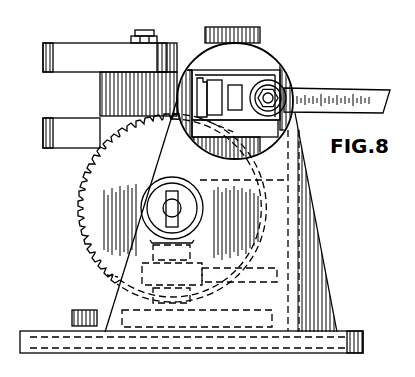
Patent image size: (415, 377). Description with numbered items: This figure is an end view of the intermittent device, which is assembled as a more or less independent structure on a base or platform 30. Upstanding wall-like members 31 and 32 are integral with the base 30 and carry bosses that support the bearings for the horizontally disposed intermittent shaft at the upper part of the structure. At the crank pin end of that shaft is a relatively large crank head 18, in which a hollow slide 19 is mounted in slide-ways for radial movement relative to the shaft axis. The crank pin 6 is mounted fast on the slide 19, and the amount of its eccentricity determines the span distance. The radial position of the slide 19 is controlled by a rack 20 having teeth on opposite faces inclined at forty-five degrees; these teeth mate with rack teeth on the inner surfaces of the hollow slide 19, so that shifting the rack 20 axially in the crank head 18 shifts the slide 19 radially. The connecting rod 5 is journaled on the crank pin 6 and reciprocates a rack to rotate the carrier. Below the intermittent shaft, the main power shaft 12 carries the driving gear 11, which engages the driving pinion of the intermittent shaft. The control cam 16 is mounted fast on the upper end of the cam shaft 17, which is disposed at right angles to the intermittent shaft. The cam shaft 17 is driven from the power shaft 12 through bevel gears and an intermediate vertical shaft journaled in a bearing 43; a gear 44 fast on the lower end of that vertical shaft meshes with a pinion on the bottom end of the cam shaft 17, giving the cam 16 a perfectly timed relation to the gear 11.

The connecting rod 5 is at (359, 92).
The crank pin 6 is at (290, 86).
The driving gear 11 is at (88, 230).
The main power shaft 12 is at (170, 208).
The control cam 16 is at (96, 48).
The cam shaft 17 is at (147, 30).
The crank head 18 is at (267, 75).
The hollow slide 19 is at (247, 78).
The rack 20 is at (237, 85).
The base 30 is at (350, 331).
The upstanding wall-like member 31 is at (300, 172).
The upstanding wall-like member 32 is at (308, 213).
The bearing 43 is at (107, 275).
The gear 44 is at (72, 315).